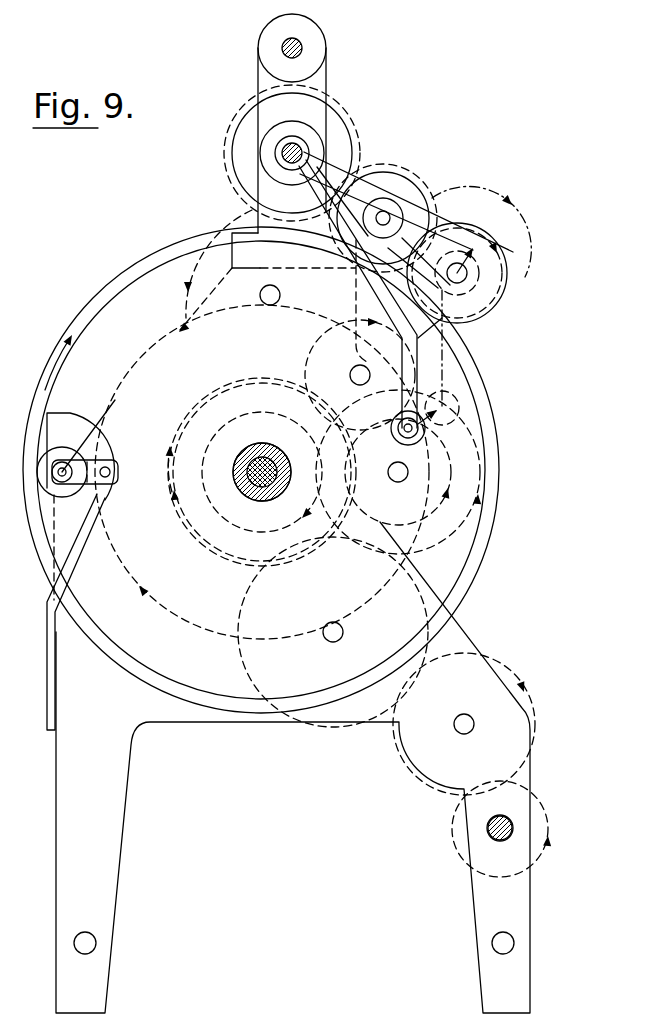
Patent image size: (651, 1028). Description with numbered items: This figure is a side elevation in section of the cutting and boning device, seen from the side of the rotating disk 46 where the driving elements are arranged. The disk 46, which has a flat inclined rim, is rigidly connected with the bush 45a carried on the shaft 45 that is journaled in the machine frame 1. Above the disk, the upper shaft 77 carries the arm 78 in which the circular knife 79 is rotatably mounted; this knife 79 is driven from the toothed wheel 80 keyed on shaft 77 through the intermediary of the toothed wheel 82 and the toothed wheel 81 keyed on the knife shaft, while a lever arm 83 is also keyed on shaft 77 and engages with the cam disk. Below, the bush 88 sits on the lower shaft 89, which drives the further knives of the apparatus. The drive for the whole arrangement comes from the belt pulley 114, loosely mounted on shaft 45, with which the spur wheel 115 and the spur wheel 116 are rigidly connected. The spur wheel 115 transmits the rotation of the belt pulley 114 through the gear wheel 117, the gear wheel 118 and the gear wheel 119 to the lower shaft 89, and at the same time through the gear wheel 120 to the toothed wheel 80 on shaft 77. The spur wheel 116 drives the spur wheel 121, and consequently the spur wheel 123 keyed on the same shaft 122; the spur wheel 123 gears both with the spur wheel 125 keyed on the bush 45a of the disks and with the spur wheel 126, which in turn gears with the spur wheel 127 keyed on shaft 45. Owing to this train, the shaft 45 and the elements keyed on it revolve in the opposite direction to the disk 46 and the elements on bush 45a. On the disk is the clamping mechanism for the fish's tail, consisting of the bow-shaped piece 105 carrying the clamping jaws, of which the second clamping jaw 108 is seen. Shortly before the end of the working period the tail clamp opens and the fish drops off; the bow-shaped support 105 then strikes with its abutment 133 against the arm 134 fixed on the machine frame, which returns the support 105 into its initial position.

The frame 1 is at (118, 754).
The shaft 45 is at (266, 448).
The bush 45a is at (240, 465).
The rotating disk 46 is at (90, 312).
The upper shaft 77 is at (292, 140).
The arm 78 is at (359, 174).
The circular knife 79 is at (522, 216).
The toothed wheel 80 is at (350, 120).
The toothed wheel 81 is at (507, 286).
The toothed wheel 82 is at (409, 188).
The lever arm 83 is at (410, 352).
The bush 88 is at (500, 816).
The shaft 89 is at (501, 840).
The bow-shaped piece 105 is at (70, 496).
The second clamping jaw 108 is at (60, 456).
The belt pulley 114 is at (126, 560).
The spur wheel 115 is at (186, 424).
The spur wheel 116 is at (265, 533).
The gear wheel 117 is at (258, 682).
The gear wheel 118 is at (514, 670).
The gear wheel 119 is at (542, 808).
The gear wheel 120 is at (200, 272).
The spur wheel 121 is at (478, 446).
The shaft 122 is at (392, 478).
The spur wheel 123 is at (438, 510).
The spur wheel 125 is at (176, 492).
The spur wheel 126 is at (318, 350).
The spur wheel 127 is at (172, 470).
The abutment 133 is at (113, 463).
The arm 134 is at (74, 564).